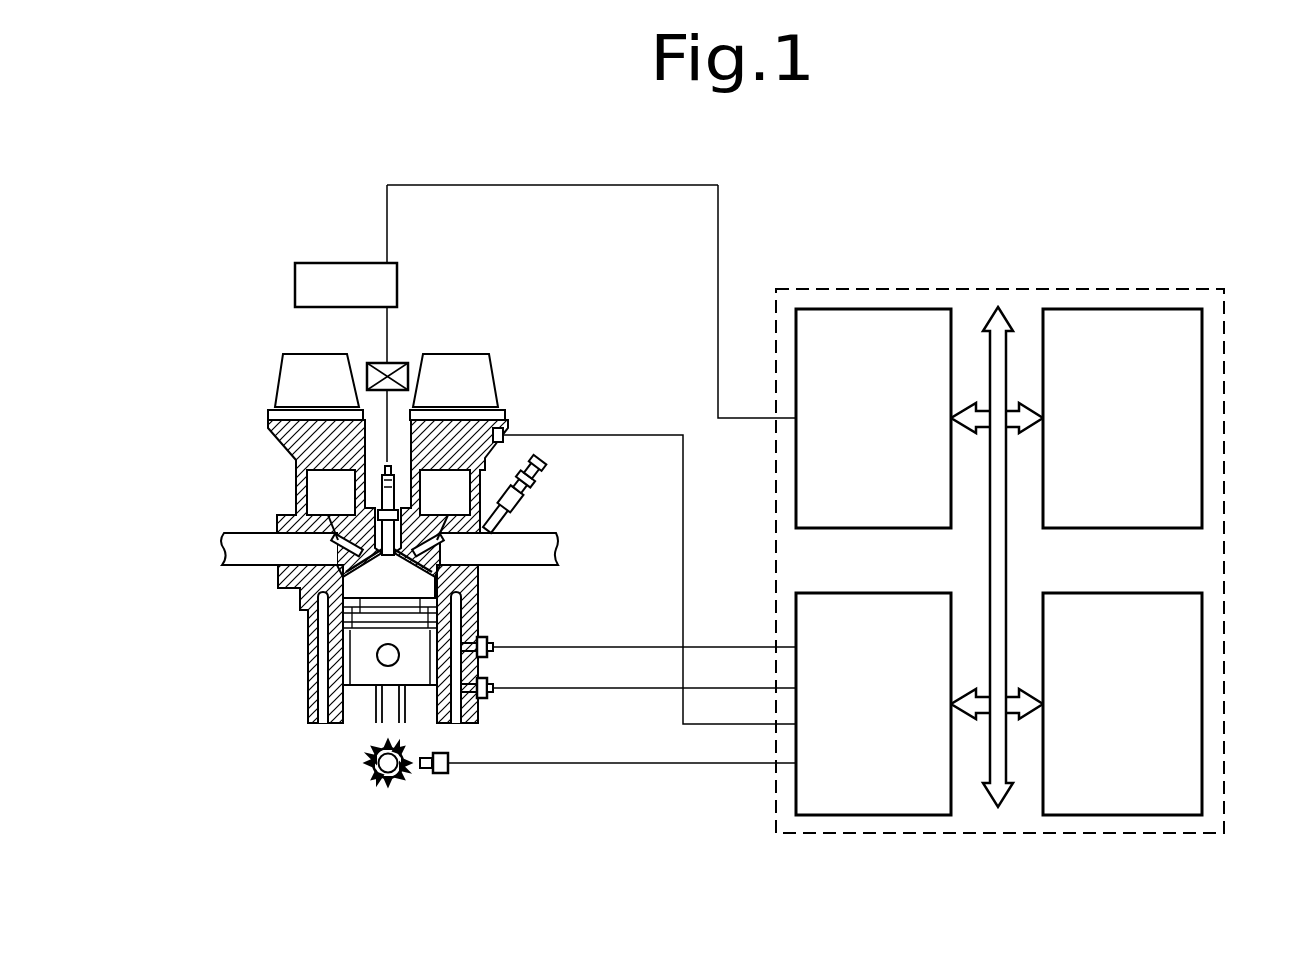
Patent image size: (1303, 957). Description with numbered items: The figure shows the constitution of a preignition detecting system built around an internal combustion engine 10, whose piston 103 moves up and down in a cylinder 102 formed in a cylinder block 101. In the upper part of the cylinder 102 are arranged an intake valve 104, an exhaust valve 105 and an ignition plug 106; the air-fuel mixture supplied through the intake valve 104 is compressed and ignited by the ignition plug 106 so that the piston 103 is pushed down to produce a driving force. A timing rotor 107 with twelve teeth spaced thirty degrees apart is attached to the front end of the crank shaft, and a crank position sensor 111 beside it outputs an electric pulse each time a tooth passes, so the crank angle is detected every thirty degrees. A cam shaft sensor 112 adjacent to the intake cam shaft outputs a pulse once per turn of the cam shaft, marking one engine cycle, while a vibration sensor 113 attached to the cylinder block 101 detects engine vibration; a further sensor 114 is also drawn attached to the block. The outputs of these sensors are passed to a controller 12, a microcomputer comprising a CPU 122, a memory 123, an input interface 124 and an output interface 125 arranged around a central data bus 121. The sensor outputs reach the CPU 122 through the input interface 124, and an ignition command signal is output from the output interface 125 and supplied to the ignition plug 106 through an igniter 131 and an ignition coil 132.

The internal combustion engine 10 is at (391, 810).
The cylinder block 101 is at (473, 585).
The cylinder 102 is at (302, 623).
The piston 103 is at (356, 665).
The intake valve 104 is at (440, 552).
The exhaust valve 105 is at (348, 552).
The ignition plug 106 is at (382, 490).
The timing rotor 107 is at (370, 777).
The crank position sensor 111 is at (448, 755).
The cam shaft sensor 112 is at (503, 435).
The vibration sensor 113 is at (490, 640).
The vibration sensor 114 is at (490, 688).
The controller 12 is at (1088, 287).
The data bus 121 is at (1012, 315).
The CPU 122 is at (1187, 308).
The memory 123 is at (1179, 815).
The input interface 124 is at (919, 815).
The output interface 125 is at (923, 308).
The igniter 131 is at (397, 281).
The ignition coil 132 is at (406, 363).